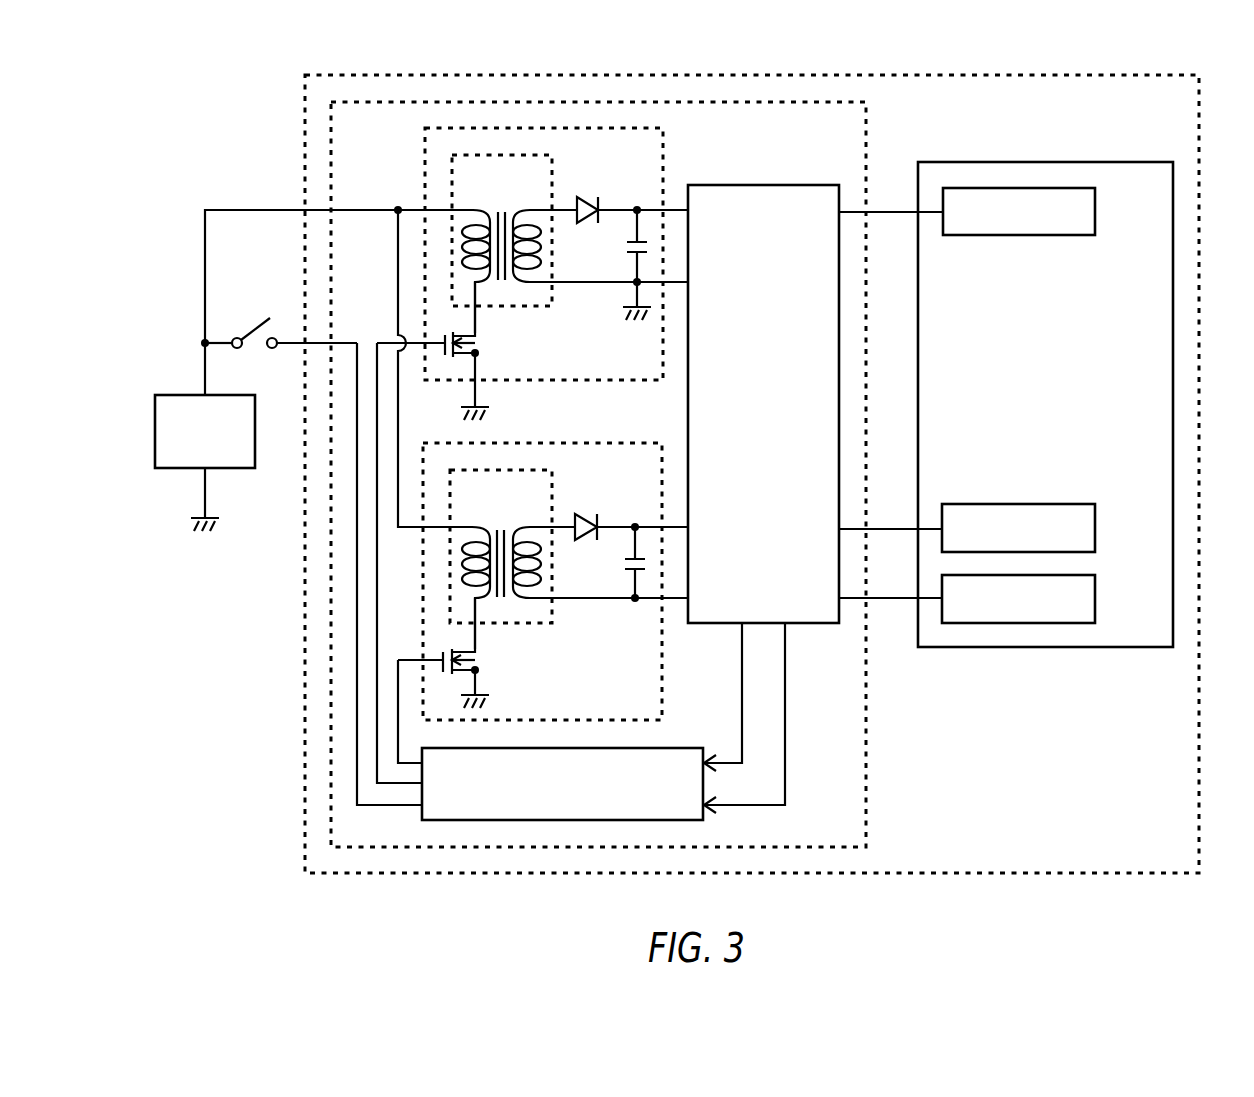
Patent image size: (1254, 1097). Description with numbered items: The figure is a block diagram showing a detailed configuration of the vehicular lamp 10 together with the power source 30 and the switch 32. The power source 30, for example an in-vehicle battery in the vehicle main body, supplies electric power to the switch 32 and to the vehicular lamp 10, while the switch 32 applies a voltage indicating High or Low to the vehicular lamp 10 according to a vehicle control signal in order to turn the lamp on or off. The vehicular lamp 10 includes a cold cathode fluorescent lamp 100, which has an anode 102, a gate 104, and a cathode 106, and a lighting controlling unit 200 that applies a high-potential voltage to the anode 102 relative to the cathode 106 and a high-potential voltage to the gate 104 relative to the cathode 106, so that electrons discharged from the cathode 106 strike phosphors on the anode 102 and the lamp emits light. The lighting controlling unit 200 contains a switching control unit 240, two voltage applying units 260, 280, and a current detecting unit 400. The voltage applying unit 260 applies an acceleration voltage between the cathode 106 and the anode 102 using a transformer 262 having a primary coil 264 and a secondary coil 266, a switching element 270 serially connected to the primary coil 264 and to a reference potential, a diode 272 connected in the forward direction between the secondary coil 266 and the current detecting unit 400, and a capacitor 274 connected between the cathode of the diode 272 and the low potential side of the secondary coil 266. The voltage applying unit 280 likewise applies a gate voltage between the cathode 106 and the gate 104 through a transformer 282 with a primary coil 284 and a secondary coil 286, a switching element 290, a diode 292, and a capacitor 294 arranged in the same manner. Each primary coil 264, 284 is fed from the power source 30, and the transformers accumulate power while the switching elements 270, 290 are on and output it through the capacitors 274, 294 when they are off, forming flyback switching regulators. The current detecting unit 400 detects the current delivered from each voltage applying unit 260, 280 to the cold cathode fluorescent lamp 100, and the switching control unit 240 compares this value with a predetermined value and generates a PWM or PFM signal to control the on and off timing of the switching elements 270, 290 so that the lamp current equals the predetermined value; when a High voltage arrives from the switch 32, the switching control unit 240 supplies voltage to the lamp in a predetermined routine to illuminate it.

The vehicular lamp 10 is at (1199, 122).
The power source 30 is at (180, 394).
The switch 32 is at (253, 322).
The cold cathode fluorescent lamp 100 is at (1045, 162).
The anode 102 is at (1095, 212).
The gate 104 is at (1095, 529).
The cathode 106 is at (1095, 598).
The lighting controlling unit 200 is at (866, 745).
The switching control unit 240 is at (680, 748).
The voltage applying unit 260 is at (425, 175).
The transformer 262 is at (544, 251).
The primary coil 264 is at (470, 208).
The secondary coil 266 is at (524, 208).
The switching element 270 is at (481, 344).
The diode 272 is at (585, 203).
The capacitor 274 is at (628, 247).
The voltage applying unit 280 is at (576, 443).
The transformer 282 is at (542, 566).
The primary coil 284 is at (469, 525).
The secondary coil 286 is at (524, 525).
The switching element 290 is at (481, 661).
The diode 292 is at (584, 519).
The capacitor 294 is at (625, 564).
The current detecting unit 400 is at (765, 185).